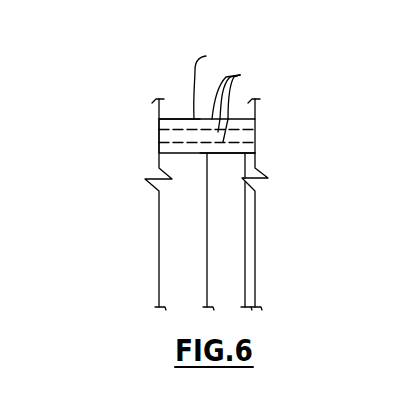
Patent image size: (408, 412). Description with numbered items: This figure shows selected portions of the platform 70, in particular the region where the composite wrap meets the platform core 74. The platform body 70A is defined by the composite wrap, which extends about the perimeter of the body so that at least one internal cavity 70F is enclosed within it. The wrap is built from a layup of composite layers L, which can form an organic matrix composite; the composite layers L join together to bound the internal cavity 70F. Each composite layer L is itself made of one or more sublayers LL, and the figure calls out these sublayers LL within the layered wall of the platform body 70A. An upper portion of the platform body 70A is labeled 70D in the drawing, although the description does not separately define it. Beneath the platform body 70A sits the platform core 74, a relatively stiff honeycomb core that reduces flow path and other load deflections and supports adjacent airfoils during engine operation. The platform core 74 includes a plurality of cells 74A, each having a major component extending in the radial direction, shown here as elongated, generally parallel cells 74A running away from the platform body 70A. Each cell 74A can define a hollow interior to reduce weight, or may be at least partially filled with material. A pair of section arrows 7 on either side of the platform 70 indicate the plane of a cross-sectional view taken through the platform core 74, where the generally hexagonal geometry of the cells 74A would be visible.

The platform 70 is at (185, 171).
The platform body 70A is at (257, 129).
The top surface of anchor body 70D is at (176, 119).
The internal cavity 70F is at (216, 153).
The platform core 74 is at (256, 206).
The cells 74A is at (193, 296).
The composite layers L is at (208, 81).
The sublayers LL is at (237, 100).
The section line 7- 7 is at (150, 239).